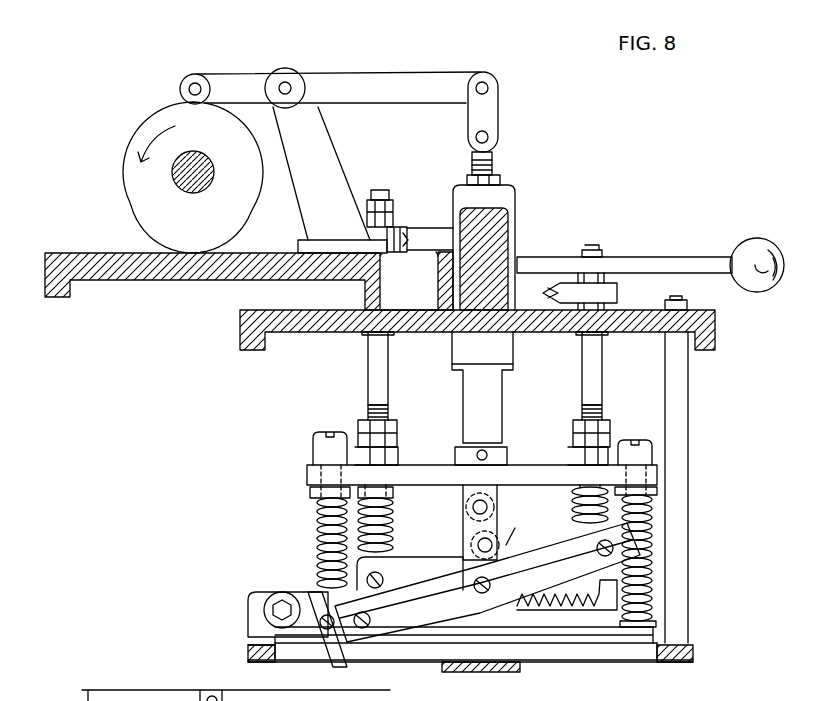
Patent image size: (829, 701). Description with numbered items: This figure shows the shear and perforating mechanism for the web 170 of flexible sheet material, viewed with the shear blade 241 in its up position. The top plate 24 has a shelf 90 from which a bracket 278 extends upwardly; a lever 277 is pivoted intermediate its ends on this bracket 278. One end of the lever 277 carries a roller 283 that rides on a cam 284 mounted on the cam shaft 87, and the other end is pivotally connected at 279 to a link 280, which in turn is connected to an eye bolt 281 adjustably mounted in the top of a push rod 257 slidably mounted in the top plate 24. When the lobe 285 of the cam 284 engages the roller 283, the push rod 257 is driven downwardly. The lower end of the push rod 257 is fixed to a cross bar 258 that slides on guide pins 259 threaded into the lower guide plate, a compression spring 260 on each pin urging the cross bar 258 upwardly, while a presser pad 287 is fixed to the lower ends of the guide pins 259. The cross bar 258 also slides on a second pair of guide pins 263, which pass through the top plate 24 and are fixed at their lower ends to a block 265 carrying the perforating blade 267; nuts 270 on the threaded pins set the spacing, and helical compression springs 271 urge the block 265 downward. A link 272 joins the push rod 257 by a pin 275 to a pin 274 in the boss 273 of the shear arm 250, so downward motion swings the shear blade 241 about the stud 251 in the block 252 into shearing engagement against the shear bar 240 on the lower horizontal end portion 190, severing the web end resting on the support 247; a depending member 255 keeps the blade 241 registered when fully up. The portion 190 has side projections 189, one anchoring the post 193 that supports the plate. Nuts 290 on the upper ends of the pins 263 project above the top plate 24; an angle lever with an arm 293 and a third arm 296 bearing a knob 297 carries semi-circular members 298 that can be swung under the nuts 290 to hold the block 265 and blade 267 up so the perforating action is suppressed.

The top plate 24 is at (635, 326).
The cam shaft 87 is at (195, 151).
The shelf 90 is at (143, 272).
The web 170 is at (533, 663).
The projection 189 is at (248, 653).
The lower horizontal end portion 190 is at (607, 658).
The post 193 is at (680, 470).
The shear bar 240 is at (422, 645).
The shear blade 241 is at (553, 584).
The support 247 is at (490, 669).
The arm 250 is at (522, 556).
The stud 251 is at (268, 607).
The block 252 is at (256, 626).
The depending member 255 is at (335, 664).
The push rod 257 is at (500, 400).
The cross bar 258 is at (530, 483).
The guide pins 259 is at (315, 516).
The compression spring 260 is at (320, 553).
The guide pins 263 is at (383, 370).
The block 265 is at (412, 552).
The perforating blade 267 is at (600, 598).
The nuts 270 is at (392, 428).
The helical compression springs 271 is at (389, 498).
The link 272 is at (478, 527).
The boss 273 is at (526, 525).
The pin 274 is at (478, 545).
The pin 275 is at (472, 507).
The lever 277 is at (398, 97).
The bracket 278 is at (328, 158).
The pivotal connection 279 is at (488, 86).
The link 280 is at (490, 114).
The eye bolt 281 is at (490, 168).
The roller 283 is at (193, 74).
The cam 284 is at (216, 216).
The lobe 285 is at (175, 250).
The presser pad 287 is at (603, 631).
The nuts 290 is at (383, 199).
The arm 293 is at (431, 238).
The third arm 296 is at (643, 263).
The knob 297 is at (742, 248).
The semi-circular members 298 is at (585, 296).